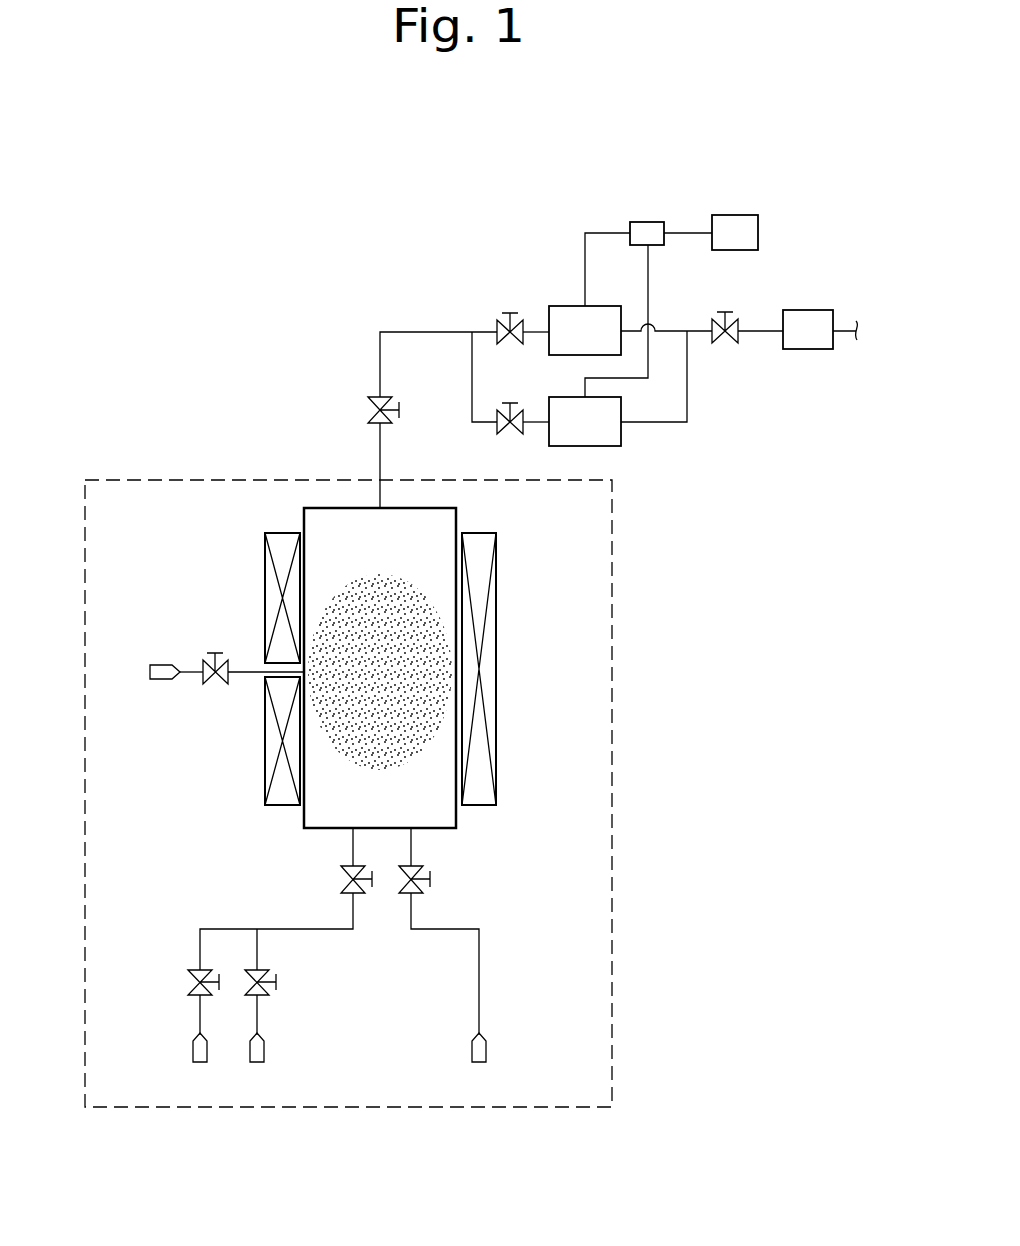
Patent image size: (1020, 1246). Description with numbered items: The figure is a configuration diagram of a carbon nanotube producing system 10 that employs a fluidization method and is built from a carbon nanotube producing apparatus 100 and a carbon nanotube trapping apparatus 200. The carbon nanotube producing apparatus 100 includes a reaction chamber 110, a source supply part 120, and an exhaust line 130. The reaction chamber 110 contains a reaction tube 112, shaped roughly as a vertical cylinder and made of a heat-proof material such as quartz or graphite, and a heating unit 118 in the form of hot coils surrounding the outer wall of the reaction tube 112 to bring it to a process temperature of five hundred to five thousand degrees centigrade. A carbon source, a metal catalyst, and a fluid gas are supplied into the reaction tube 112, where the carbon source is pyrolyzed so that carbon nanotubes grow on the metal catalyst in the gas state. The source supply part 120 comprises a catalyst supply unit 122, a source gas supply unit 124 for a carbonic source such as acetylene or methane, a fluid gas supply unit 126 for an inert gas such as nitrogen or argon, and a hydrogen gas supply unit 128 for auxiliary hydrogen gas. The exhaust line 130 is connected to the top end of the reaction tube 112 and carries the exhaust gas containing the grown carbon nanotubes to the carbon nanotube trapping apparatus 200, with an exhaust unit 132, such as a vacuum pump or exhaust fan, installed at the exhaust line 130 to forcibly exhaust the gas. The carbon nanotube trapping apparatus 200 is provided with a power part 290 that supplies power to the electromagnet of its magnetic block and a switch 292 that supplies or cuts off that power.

The carbon nanotube producing system 10 is at (270, 229).
The carbon nanotube producing apparatus 100 is at (146, 470).
The reaction chamber 110 is at (505, 752).
The reaction tube 112 is at (460, 816).
The heating unit 118 is at (498, 660).
The source supply part 120 is at (182, 934).
The catalyst supply unit 122 is at (160, 664).
The source gas supply unit 124 is at (487, 1048).
The fluid gas supply unit 126 is at (265, 1048).
The hydrogen gas supply unit 128 is at (193, 1048).
The exhaust line 130 is at (380, 440).
The exhaust unit 132 is at (810, 349).
The carbon nanotube trapping apparatus 200 is at (546, 296).
The power part 290 is at (735, 215).
The switch 292 is at (648, 222).